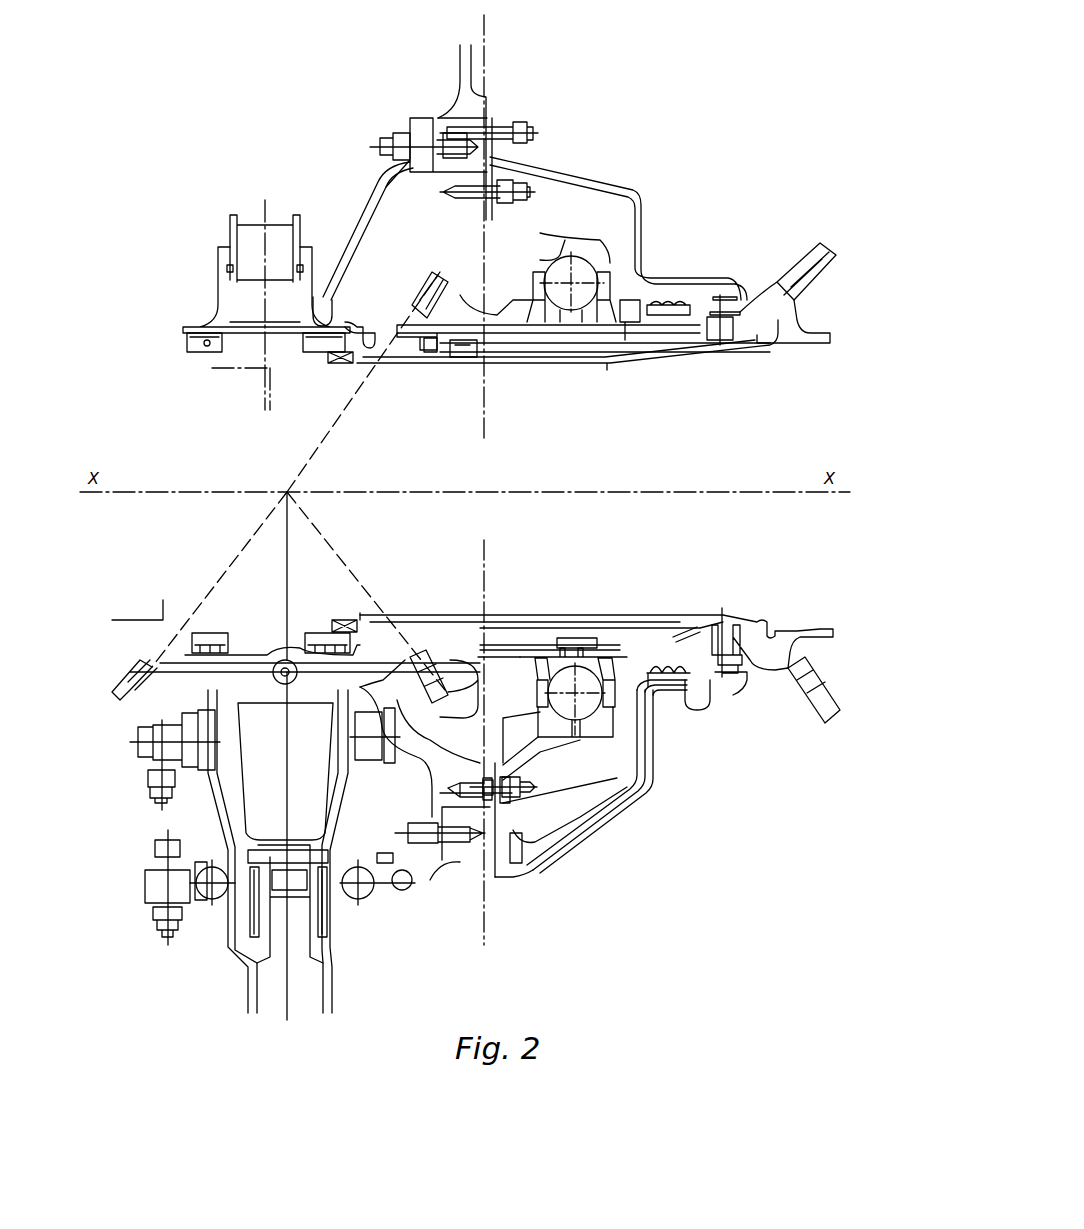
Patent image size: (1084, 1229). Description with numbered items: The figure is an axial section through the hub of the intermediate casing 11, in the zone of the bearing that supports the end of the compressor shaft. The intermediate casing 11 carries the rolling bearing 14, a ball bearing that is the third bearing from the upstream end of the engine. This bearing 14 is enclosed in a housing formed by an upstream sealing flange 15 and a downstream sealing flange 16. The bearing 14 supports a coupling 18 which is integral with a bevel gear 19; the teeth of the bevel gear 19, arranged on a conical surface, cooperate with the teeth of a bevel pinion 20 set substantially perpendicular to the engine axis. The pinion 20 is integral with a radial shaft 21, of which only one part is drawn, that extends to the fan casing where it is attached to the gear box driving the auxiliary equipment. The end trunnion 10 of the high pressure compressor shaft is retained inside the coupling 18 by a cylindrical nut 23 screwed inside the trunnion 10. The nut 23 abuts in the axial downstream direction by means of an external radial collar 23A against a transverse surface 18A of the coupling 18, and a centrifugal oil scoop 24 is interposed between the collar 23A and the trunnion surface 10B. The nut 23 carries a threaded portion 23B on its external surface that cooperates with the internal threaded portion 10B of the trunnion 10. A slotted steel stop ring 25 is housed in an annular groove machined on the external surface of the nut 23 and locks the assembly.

The end trunnion 10 is at (743, 647).
The internal threaded portion 10B is at (540, 355).
The intermediate casing 11 is at (458, 58).
The rolling bearing 14 is at (608, 730).
The upstream sealing flange 15 is at (372, 212).
The downstream sealing flange 16 is at (596, 182).
The coupling 18 is at (513, 305).
The transverse surface 18A is at (440, 610).
The bevel gear 19 is at (476, 708).
The bevel pinion 20 is at (140, 672).
The radial shaft 21 is at (330, 990).
The cylindrical nut 23 is at (360, 368).
The external radial collar 23A is at (420, 352).
The threaded portion 23B is at (515, 360).
The centrifugal oil scoop 24 is at (432, 352).
The slotted stop ring 25 is at (462, 357).